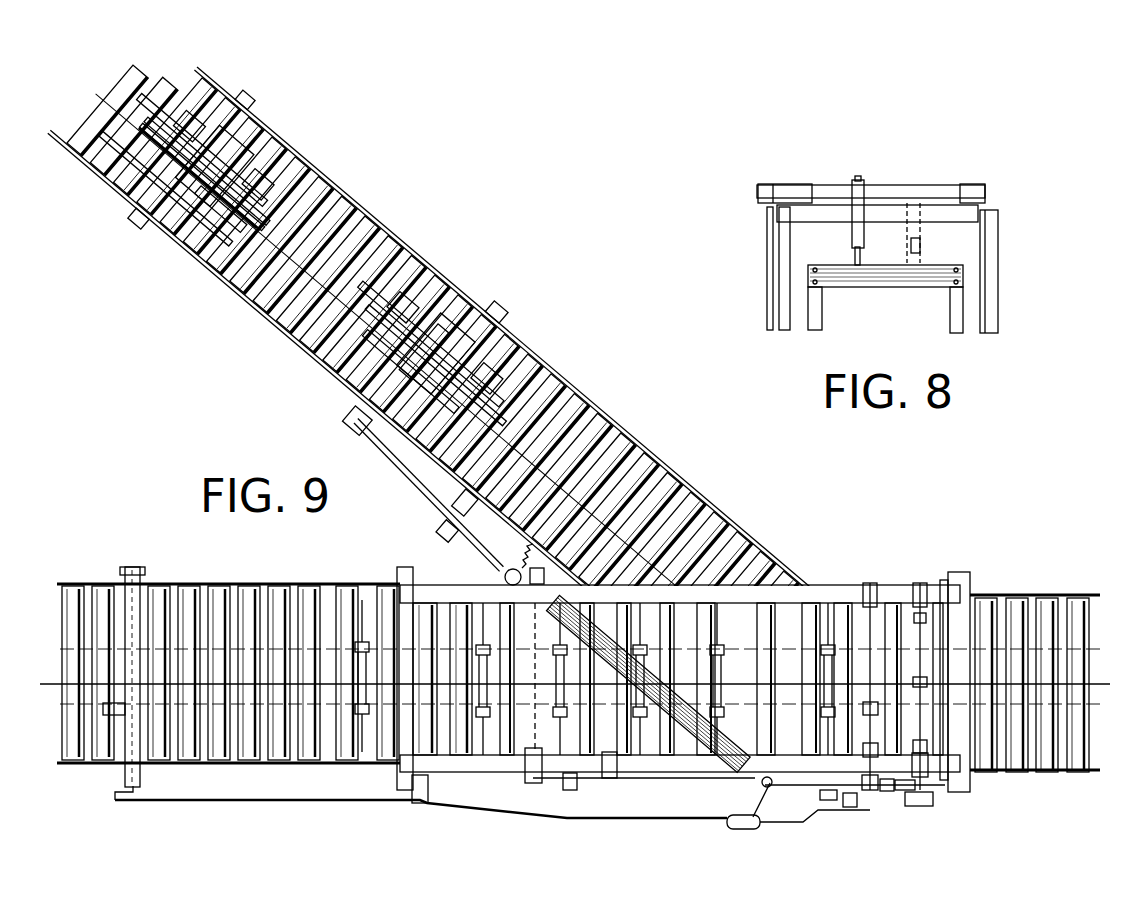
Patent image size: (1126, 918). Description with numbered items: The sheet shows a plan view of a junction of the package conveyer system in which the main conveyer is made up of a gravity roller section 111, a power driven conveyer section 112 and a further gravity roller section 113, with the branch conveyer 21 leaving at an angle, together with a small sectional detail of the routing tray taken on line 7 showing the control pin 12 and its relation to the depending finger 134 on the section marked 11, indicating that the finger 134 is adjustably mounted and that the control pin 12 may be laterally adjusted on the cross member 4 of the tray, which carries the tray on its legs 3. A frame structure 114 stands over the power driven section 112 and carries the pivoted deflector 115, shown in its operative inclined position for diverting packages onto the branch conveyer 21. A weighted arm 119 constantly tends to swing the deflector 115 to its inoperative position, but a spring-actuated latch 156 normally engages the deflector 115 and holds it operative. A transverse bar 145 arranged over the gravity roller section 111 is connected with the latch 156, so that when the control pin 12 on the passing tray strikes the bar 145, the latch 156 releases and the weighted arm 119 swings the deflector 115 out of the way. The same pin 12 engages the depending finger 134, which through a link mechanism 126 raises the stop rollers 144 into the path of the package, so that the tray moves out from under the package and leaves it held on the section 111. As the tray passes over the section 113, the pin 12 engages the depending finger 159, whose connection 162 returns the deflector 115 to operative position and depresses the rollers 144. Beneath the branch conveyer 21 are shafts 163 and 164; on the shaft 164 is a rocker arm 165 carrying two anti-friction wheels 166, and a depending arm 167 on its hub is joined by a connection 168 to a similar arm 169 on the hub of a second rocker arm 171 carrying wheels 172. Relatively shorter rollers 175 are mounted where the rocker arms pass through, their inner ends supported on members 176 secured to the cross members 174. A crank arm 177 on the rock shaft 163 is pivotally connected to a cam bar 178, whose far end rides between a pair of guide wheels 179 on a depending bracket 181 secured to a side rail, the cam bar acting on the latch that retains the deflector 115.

In FIG. 8, the legs 3 is at (818, 315).
In FIG. 8, the cross member 4 is at (873, 272).
In FIG. 9, the section line 7- 7 is at (47, 712).
In FIG. 9, the section line 11- 11 is at (137, 123).
In FIG. 8, the control pin 12 is at (917, 252).
In FIG. 9, the branch conveyer 21 is at (645, 447).
In FIG. 9, the gravity roller section 111 is at (1040, 598).
In FIG. 9, the power driven conveyer section 112 is at (500, 745).
In FIG. 9, the gravity roller section 113 is at (88, 765).
In FIG. 9, the frame structure 114 is at (435, 592).
In FIG. 9, the deflector 115 is at (702, 728).
In FIG. 9, the weighted arm 119 is at (923, 806).
In FIG. 9, the link mechanism 126 is at (803, 807).
In FIG. 9, the depending finger 134 is at (878, 705).
In FIG. 8, the depending finger 134 is at (920, 233).
In FIG. 9, the stop rollers 144 is at (828, 640).
In FIG. 9, the transverse bar 145 is at (935, 630).
In FIG. 9, the spring-actuated latch 156 is at (507, 577).
In FIG. 9, the depending finger 159 is at (122, 707).
In FIG. 9, the connection 162 is at (328, 802).
In FIG. 9, the shaft 163 is at (503, 303).
In FIG. 9, the shaft 164 is at (252, 98).
In FIG. 9, the rocker arm 165 is at (200, 205).
In FIG. 9, the anti-friction wheels 166 is at (225, 165).
In FIG. 9, the depending arm 167 is at (135, 205).
In FIG. 9, the connection 168 is at (217, 197).
In FIG. 9, the arm 169 is at (423, 353).
In FIG. 9, the rocker arm 171 is at (430, 387).
In FIG. 9, the anti-friction wheels 172 is at (487, 380).
In FIG. 9, the cross members 174 is at (215, 220).
In FIG. 9, the shorter rollers 175 is at (265, 150).
In FIG. 9, the members 176 is at (258, 124).
In FIG. 9, the crank arm 177 is at (350, 433).
In FIG. 9, the cam bar 178 is at (383, 463).
In FIG. 9, the guide wheels 179 is at (443, 537).
In FIG. 9, the depending bracket 181 is at (470, 498).